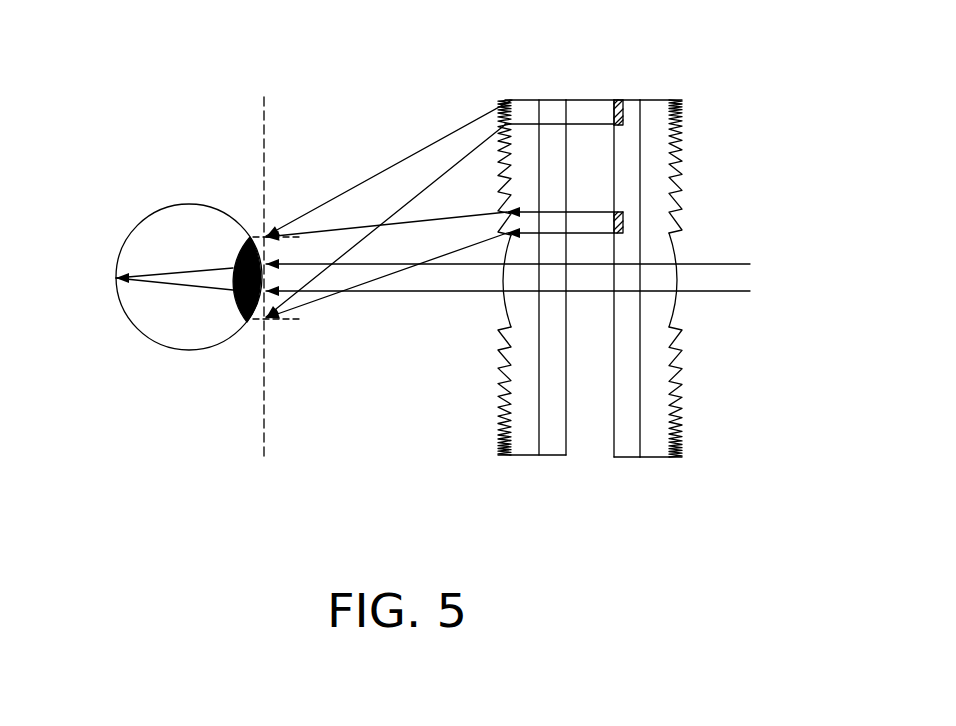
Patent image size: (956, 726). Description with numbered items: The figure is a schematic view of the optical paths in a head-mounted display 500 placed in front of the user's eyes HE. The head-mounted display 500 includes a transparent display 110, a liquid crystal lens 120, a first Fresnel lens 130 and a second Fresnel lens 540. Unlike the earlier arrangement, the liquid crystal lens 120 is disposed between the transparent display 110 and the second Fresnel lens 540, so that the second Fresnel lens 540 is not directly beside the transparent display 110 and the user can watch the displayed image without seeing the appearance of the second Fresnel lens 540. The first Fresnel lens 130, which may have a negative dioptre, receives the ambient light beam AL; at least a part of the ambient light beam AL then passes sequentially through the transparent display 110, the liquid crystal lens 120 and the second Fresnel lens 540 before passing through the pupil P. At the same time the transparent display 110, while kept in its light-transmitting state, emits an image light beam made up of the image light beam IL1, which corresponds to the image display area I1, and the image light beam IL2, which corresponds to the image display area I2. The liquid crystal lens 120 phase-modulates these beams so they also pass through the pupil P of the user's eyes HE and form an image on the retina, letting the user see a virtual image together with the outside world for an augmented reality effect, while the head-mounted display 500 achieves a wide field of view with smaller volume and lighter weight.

The head-mounted display 500 is at (605, 283).
The transparent display 110 is at (659, 253).
The liquid crystal lens 120 is at (552, 428).
The first Fresnel lens 130 is at (660, 105).
The second Fresnel lens 540 is at (527, 408).
The user's eyes HE is at (173, 333).
The pupil P is at (263, 412).
The ambient light beam AL is at (715, 268).
The image light beam IL1 is at (392, 210).
The image light beam IL2 is at (450, 253).
The image display area I1 is at (623, 113).
The image display area I2 is at (623, 222).